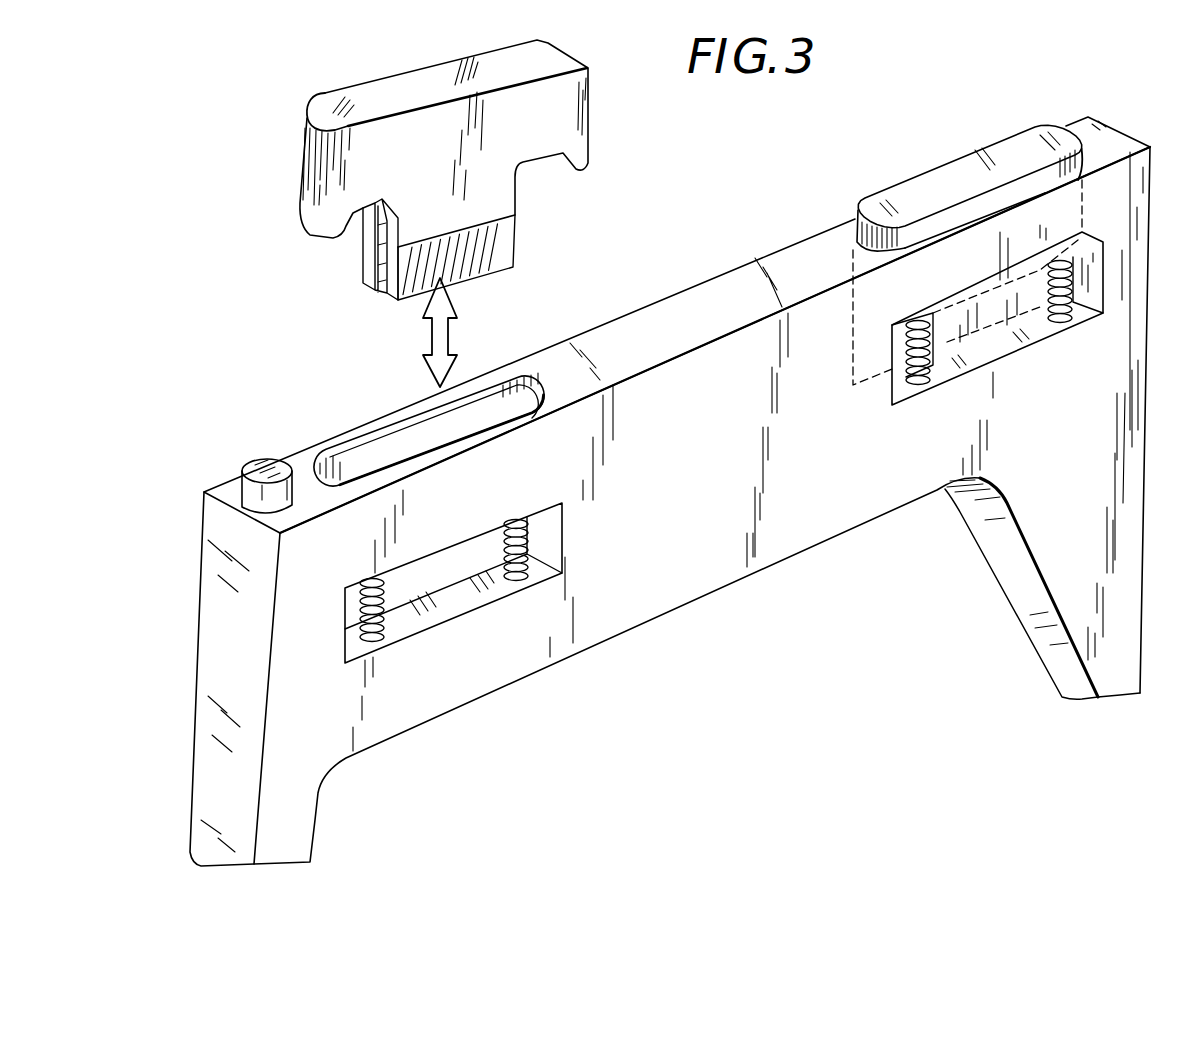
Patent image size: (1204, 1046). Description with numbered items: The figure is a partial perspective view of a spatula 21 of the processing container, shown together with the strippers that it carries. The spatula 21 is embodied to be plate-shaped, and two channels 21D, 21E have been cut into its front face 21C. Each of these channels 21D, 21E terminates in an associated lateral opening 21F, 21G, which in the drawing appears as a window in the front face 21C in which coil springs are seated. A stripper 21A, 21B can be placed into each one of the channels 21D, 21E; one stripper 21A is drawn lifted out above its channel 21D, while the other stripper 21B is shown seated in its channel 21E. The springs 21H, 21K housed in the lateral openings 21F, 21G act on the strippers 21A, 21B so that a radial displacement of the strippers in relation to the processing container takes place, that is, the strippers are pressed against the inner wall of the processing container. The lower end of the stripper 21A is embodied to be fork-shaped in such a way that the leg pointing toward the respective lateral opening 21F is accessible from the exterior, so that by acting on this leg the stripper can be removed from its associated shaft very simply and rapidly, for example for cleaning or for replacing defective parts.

The spatula 21 is at (698, 449).
The stripper 21A is at (427, 162).
The stripper 21B is at (907, 195).
The front face 21C is at (728, 316).
The channel 21D is at (517, 396).
The channel 21E is at (943, 216).
The lateral opening 21F is at (442, 570).
The lateral opening 21G is at (1000, 326).
The spring 21H is at (384, 618).
The spring 21K is at (1070, 314).